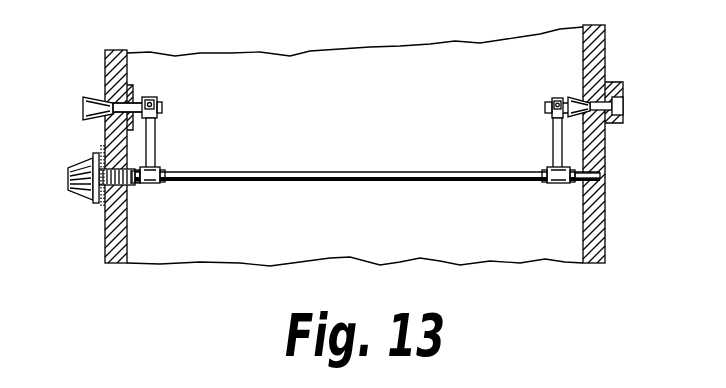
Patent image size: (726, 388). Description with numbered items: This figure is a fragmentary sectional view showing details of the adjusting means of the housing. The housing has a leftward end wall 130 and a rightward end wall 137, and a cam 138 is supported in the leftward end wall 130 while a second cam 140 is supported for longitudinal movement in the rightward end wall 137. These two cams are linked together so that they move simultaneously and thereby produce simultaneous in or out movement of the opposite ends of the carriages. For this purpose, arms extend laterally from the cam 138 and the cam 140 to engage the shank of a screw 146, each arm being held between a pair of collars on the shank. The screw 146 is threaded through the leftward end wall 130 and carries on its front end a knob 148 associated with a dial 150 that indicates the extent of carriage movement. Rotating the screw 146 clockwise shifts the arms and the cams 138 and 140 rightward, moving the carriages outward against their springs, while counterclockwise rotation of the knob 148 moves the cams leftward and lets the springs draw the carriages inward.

The leftward end wall 130 is at (117, 243).
The rightward end wall 137 is at (595, 215).
The cam 138 is at (92, 97).
The cam 140 is at (570, 97).
The screw 146 is at (308, 177).
The knob 148 is at (87, 201).
The dial 150 is at (100, 148).